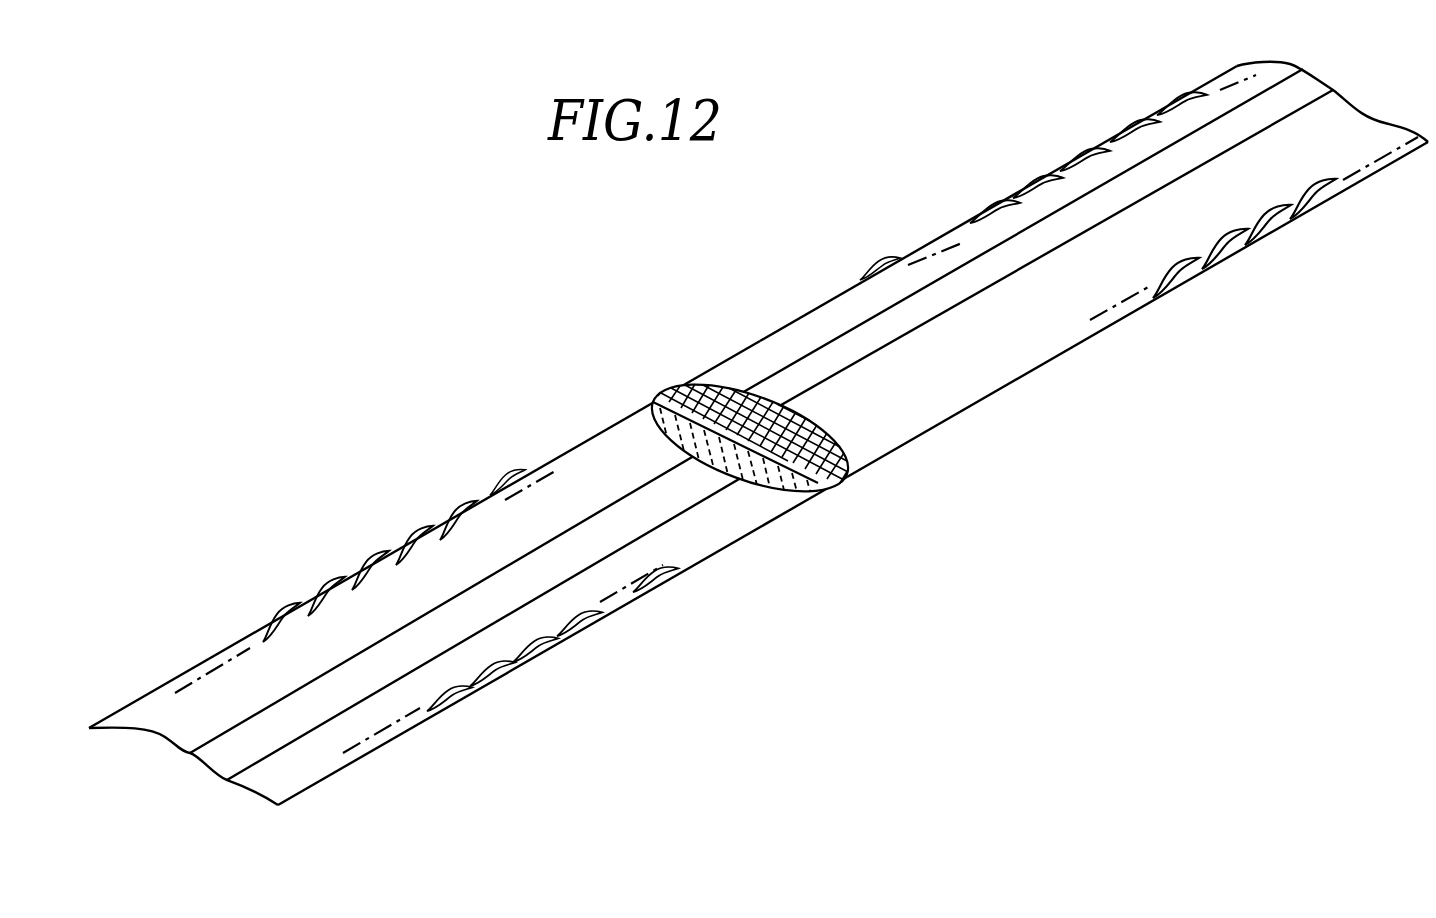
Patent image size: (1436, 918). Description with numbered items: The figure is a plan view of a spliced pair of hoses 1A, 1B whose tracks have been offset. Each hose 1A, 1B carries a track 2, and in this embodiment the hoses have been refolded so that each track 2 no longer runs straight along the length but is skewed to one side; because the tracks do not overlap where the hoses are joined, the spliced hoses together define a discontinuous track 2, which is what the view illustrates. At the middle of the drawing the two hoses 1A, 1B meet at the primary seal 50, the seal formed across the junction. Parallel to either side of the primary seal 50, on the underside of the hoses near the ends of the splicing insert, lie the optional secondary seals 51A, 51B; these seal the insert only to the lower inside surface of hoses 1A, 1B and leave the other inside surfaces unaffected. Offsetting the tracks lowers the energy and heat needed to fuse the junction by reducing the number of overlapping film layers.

The hose 1A is at (1050, 122).
The hose 1B is at (609, 676).
The track 2 is at (433, 660).
The primary seal 50 is at (649, 373).
The secondary seal 51A is at (491, 459).
The secondary seal 51B is at (860, 249).